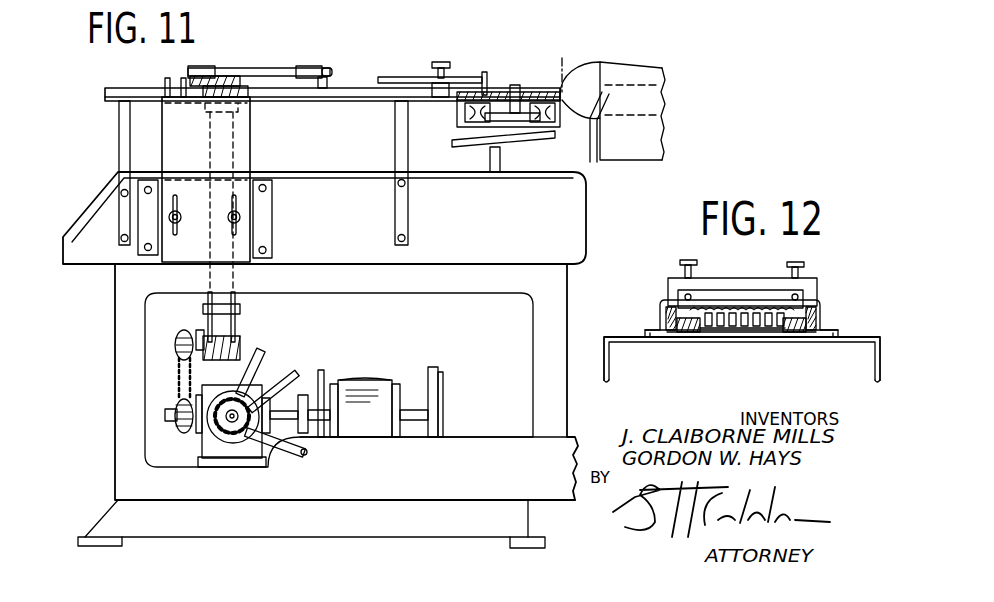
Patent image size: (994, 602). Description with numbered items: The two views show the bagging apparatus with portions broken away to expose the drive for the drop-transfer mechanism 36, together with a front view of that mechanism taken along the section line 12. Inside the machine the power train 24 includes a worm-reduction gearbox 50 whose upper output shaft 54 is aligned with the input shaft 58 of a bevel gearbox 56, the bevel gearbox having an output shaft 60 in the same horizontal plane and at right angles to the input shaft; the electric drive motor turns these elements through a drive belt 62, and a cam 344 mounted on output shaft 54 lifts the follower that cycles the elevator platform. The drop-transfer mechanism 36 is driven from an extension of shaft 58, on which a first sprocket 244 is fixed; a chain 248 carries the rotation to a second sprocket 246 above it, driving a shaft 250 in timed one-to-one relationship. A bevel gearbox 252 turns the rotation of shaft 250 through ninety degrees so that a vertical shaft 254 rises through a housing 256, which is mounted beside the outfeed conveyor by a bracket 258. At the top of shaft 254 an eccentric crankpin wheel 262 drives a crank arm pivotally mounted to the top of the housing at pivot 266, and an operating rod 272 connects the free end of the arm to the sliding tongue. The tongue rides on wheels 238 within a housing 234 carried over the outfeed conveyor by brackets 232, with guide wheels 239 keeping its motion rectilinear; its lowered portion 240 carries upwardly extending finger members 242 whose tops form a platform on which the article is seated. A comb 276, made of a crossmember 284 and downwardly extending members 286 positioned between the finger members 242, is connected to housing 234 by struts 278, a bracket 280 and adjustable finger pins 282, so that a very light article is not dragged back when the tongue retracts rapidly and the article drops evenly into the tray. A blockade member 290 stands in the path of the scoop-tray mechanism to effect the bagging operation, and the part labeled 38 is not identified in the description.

In FIG. 11, the section line 12 is at (559, 58).
In FIG. 11, the drive train 24 is at (405, 362).
In FIG. 11, the drop-transfer mechanism 36 is at (97, 270).
In FIG. 11, the discharge chute bar 38 is at (468, 145).
In FIG. 11, the worm-reduction gearbox 50 is at (352, 384).
In FIG. 11, the output shaft 54 is at (313, 428).
In FIG. 11, the bevel gearbox 56 is at (251, 370).
In FIG. 11, the input shaft 58 is at (166, 414).
In FIG. 11, the output shaft 60 is at (237, 410).
In FIG. 11, the drive belt 62 is at (303, 456).
In FIG. 11, the brackets 232 is at (118, 141).
In FIG. 12, the brackets 232 is at (606, 346).
In FIG. 12, the housing 234 is at (815, 302).
In FIG. 12, the wheels 238 is at (662, 310).
In FIG. 12, the guide wheels 239 is at (683, 334).
In FIG. 12, the lowered portion 240 is at (711, 334).
In FIG. 12, the finger members 242 is at (736, 334).
In FIG. 11, the first sprocket 244 is at (180, 428).
In FIG. 11, the second sprocket 246 is at (192, 322).
In FIG. 11, the drive belt 248 is at (177, 368).
In FIG. 11, the shaft 250 is at (200, 330).
In FIG. 11, the bevel gearbox 252 is at (240, 340).
In FIG. 11, the shaft 254 is at (237, 297).
In FIG. 11, the housing 256 is at (251, 151).
In FIG. 11, the bracket 258 is at (270, 218).
In FIG. 11, the eccentric crankpin wheel 262 is at (250, 92).
In FIG. 11, the pivot 266 is at (165, 86).
In FIG. 11, the operating rod 272 is at (247, 70).
In FIG. 11, the comb 276 is at (498, 55).
In FIG. 11, the struts 278 is at (415, 77).
In FIG. 12, the struts 278 is at (687, 296).
In FIG. 12, the bracket 280 is at (728, 280).
In FIG. 11, the adjustable pins 282 is at (442, 62).
In FIG. 12, the adjustable pins 282 is at (801, 264).
In FIG. 12, the crossmember 284 is at (753, 298).
In FIG. 12, the downwardly extending members 286 is at (768, 333).
In FIG. 11, the blockade member 290 is at (492, 115).
In FIG. 11, the cam 344 is at (325, 372).